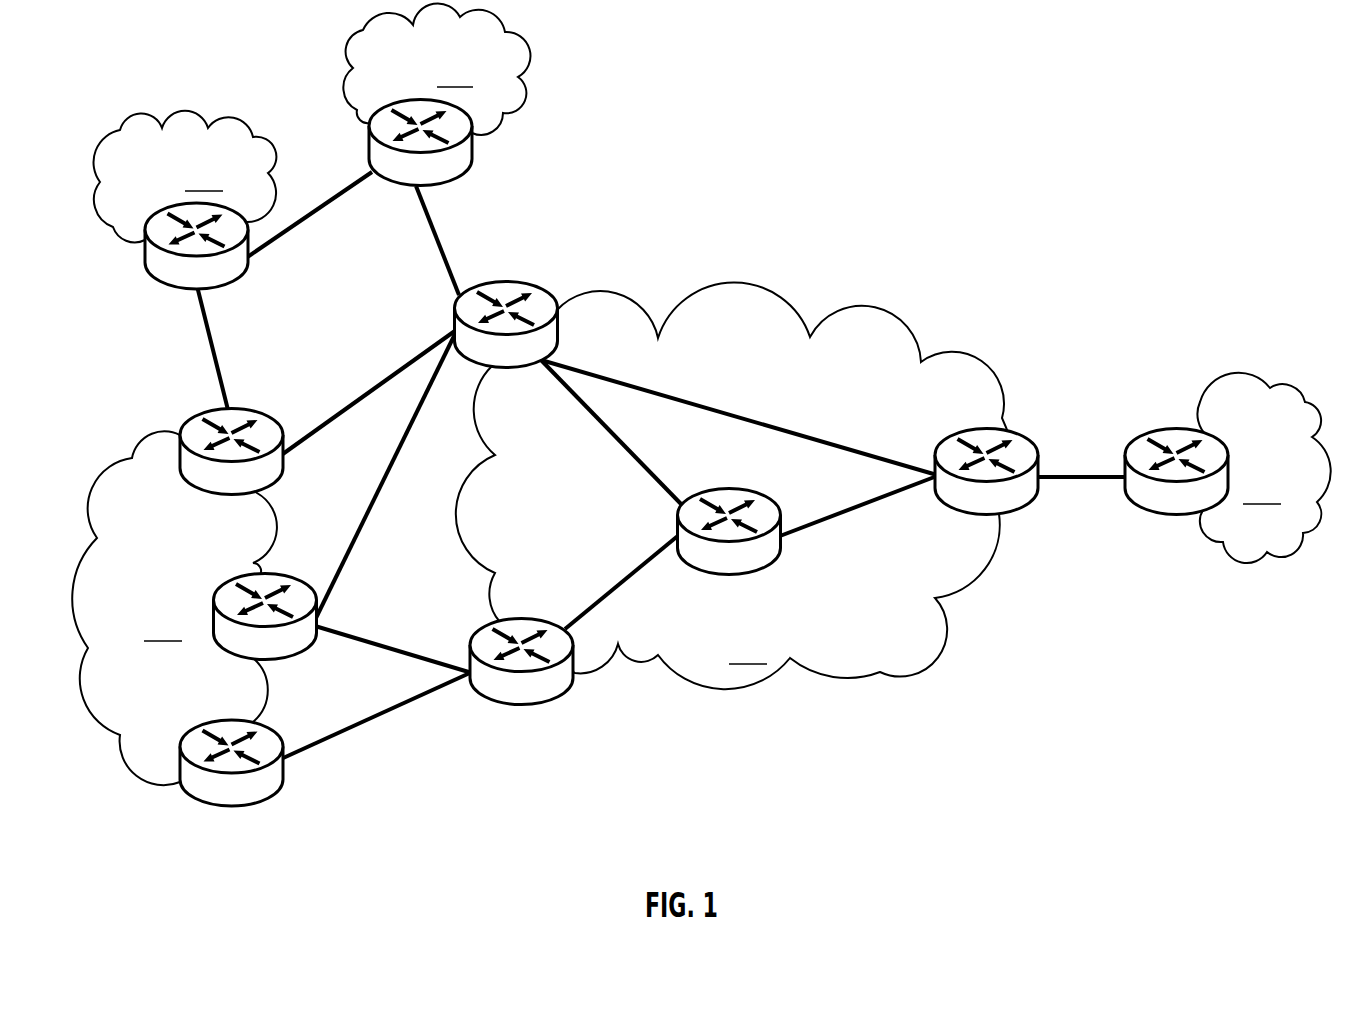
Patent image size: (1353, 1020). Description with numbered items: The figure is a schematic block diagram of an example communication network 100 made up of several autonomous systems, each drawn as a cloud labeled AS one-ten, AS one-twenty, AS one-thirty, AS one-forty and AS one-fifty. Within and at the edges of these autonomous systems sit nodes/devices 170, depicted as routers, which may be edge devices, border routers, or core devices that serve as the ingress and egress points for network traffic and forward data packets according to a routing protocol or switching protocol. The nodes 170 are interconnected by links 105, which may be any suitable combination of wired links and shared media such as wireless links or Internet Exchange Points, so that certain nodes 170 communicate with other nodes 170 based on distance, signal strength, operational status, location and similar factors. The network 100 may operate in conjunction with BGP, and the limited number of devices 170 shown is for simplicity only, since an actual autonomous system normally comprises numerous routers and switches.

The network 100 is at (701, 394).
The links 105 is at (662, 467).
The nodes/devices 170 is at (657, 474).